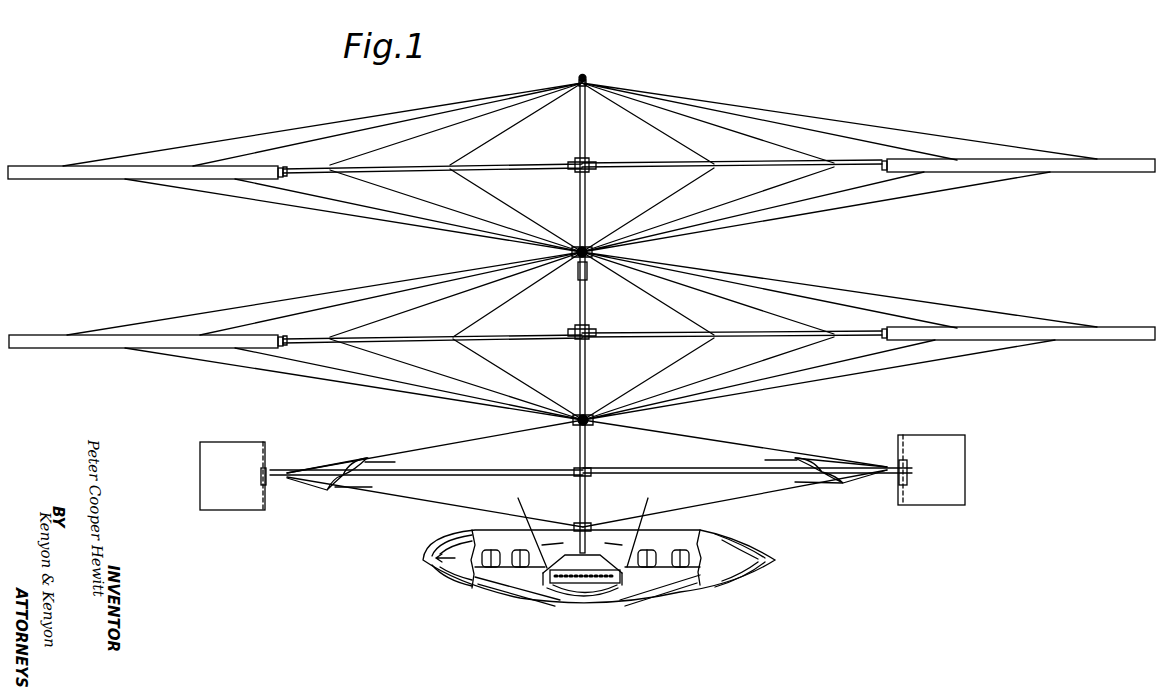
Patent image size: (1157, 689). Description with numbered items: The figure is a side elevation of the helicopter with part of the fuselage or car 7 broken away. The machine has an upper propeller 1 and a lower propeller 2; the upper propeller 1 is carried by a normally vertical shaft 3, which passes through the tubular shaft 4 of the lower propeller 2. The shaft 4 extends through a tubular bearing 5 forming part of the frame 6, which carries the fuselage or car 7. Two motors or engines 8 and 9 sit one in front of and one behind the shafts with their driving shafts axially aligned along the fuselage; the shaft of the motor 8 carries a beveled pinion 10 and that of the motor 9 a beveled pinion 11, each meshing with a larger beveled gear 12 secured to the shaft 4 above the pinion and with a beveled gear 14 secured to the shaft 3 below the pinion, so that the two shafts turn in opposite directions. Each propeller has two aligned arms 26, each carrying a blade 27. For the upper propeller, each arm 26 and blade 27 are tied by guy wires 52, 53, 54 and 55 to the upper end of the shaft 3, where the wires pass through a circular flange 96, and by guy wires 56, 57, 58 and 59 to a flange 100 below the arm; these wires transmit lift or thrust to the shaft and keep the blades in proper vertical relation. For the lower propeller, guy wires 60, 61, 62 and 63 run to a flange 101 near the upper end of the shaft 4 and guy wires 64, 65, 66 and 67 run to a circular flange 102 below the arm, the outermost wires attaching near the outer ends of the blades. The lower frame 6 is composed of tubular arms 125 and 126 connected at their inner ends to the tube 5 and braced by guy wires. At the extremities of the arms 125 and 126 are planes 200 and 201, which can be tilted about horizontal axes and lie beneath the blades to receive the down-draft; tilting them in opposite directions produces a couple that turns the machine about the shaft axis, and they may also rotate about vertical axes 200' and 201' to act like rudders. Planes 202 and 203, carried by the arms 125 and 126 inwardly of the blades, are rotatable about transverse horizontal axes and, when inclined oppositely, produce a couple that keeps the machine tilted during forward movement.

The upper propeller 1 is at (728, 165).
The lower propeller 2 is at (760, 337).
The shaft 3 is at (586, 146).
The tubular shaft 4 is at (586, 316).
The tubular bearing 5 is at (594, 460).
The frame 6 is at (680, 566).
The fuselage or car 7 is at (455, 579).
The motor or engine 8 is at (508, 571).
The motor or engine 9 is at (660, 573).
The beveled pinion 10 is at (553, 591).
The beveled pinion 11 is at (612, 592).
The beveled gear 12 is at (590, 600).
The beveled gear 14 is at (570, 591).
The arm 26 is at (408, 169).
The blade 27 is at (150, 172).
The guy wire 52 is at (302, 127).
The guy wire 53 is at (372, 129).
The guy wire 54 is at (425, 129).
The guy wire 55 is at (500, 121).
The guy wire 56 is at (318, 209).
The guy wire 57 is at (378, 211).
The guy wire 58 is at (437, 209).
The guy wire 59 is at (493, 213).
The guy wire 60 is at (260, 299).
The guy wire 61 is at (345, 301).
The guy wire 62 is at (415, 303).
The guy wire 63 is at (510, 298).
The guy wire 64 is at (315, 379).
The guy wire 65 is at (365, 381).
The guy wire 66 is at (435, 386).
The guy wire 67 is at (515, 374).
The circular flange 96 is at (585, 83).
The flange 100 is at (589, 245).
The flange 101 is at (578, 270).
The circular flange 102 is at (590, 413).
The tubular arm 125 is at (772, 470).
The tubular arm 126 is at (390, 478).
The plane 200 is at (943, 486).
The vertical axis 200' is at (906, 494).
The plane 201 is at (232, 498).
The vertical axis 201' is at (281, 492).
The plane 202 is at (825, 466).
The plane 203 is at (353, 463).